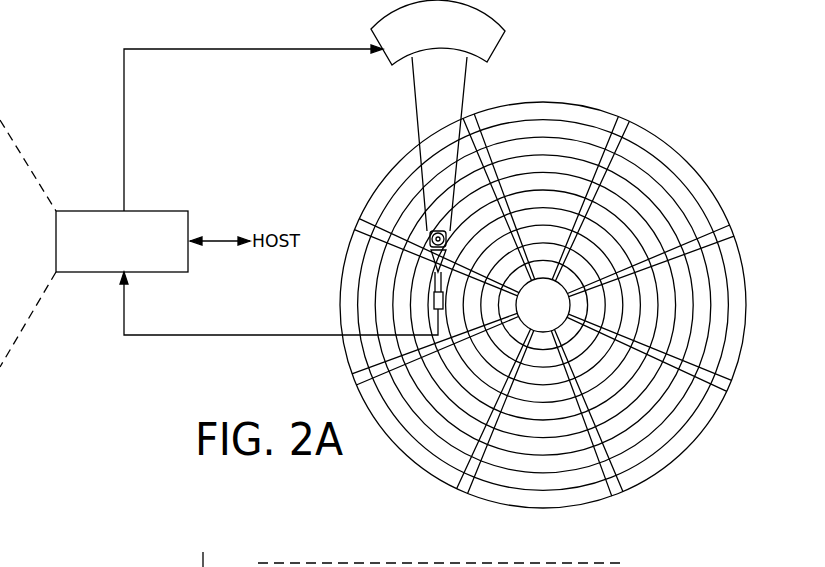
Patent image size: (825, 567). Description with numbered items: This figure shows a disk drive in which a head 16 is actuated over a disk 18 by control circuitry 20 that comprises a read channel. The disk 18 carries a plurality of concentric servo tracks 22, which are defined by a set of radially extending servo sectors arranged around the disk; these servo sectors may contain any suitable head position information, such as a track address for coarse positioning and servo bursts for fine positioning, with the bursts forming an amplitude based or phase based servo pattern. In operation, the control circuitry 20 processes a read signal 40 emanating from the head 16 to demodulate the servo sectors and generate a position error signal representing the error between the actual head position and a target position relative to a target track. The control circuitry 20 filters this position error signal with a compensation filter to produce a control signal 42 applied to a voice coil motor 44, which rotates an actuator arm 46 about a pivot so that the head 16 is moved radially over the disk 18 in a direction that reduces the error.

The head 16 is at (445, 303).
The disk 18 is at (684, 150).
The control circuitry 20 is at (160, 211).
The servo tracks 22 is at (543, 130).
The read signal 40 is at (228, 337).
The control signal 42 is at (124, 110).
The voice coil motor 44 is at (392, 62).
The actuator arm 46 is at (422, 120).